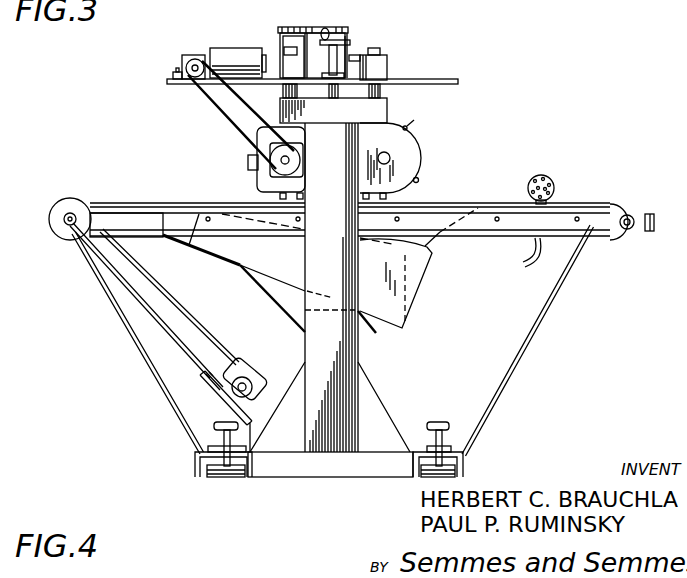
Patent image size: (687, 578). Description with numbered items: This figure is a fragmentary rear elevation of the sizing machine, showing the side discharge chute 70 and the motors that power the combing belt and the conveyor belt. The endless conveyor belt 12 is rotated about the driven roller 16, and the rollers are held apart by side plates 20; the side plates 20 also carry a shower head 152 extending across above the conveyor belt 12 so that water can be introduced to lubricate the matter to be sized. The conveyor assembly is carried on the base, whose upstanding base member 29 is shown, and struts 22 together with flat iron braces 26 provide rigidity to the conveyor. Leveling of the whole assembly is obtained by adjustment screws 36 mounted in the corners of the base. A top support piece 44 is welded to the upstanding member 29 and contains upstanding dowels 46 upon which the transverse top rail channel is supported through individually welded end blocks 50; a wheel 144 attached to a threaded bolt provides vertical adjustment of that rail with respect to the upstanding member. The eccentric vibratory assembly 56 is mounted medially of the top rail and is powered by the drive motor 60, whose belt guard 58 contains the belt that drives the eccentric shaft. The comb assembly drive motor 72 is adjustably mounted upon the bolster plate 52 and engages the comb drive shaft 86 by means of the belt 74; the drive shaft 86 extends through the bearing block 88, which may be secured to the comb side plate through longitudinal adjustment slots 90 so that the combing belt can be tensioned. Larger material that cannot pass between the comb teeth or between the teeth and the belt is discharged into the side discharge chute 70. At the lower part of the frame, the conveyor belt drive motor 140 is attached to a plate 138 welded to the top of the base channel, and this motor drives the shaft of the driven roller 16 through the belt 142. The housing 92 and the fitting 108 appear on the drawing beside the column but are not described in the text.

The endless conveyor belt 12 is at (612, 207).
The driven roller 16 is at (62, 230).
The side plates 20 is at (607, 222).
The struts 22 is at (120, 268).
The flat iron braces 26 is at (435, 242).
The upstanding base member 29 is at (337, 408).
The adjustment screws 36 is at (523, 418).
The top support piece 44 is at (372, 112).
The upstanding dowels 46 is at (382, 51).
The end blocks 50 is at (376, 70).
The bolster plate 52 is at (460, 82).
The eccentric vibratory assembly 56 is at (362, 50).
The belt guard 58 is at (317, 28).
The drive motor 60 is at (288, 38).
The side discharge chute 70 is at (393, 295).
The comb assembly drive motor 72 is at (236, 50).
The belt 74 is at (197, 82).
The comb drive shaft 86 is at (284, 161).
The bearing block 88 is at (251, 163).
The longitudinal adjustment slots 90 is at (270, 142).
The reducer housing 92 is at (390, 158).
The adjusting screw 108 is at (421, 179).
The plate 138 is at (200, 383).
The conveyor belt drive motor 140 is at (245, 368).
The belt 142 is at (173, 300).
The wheel 144 is at (343, 53).
The shower head 152 is at (556, 183).